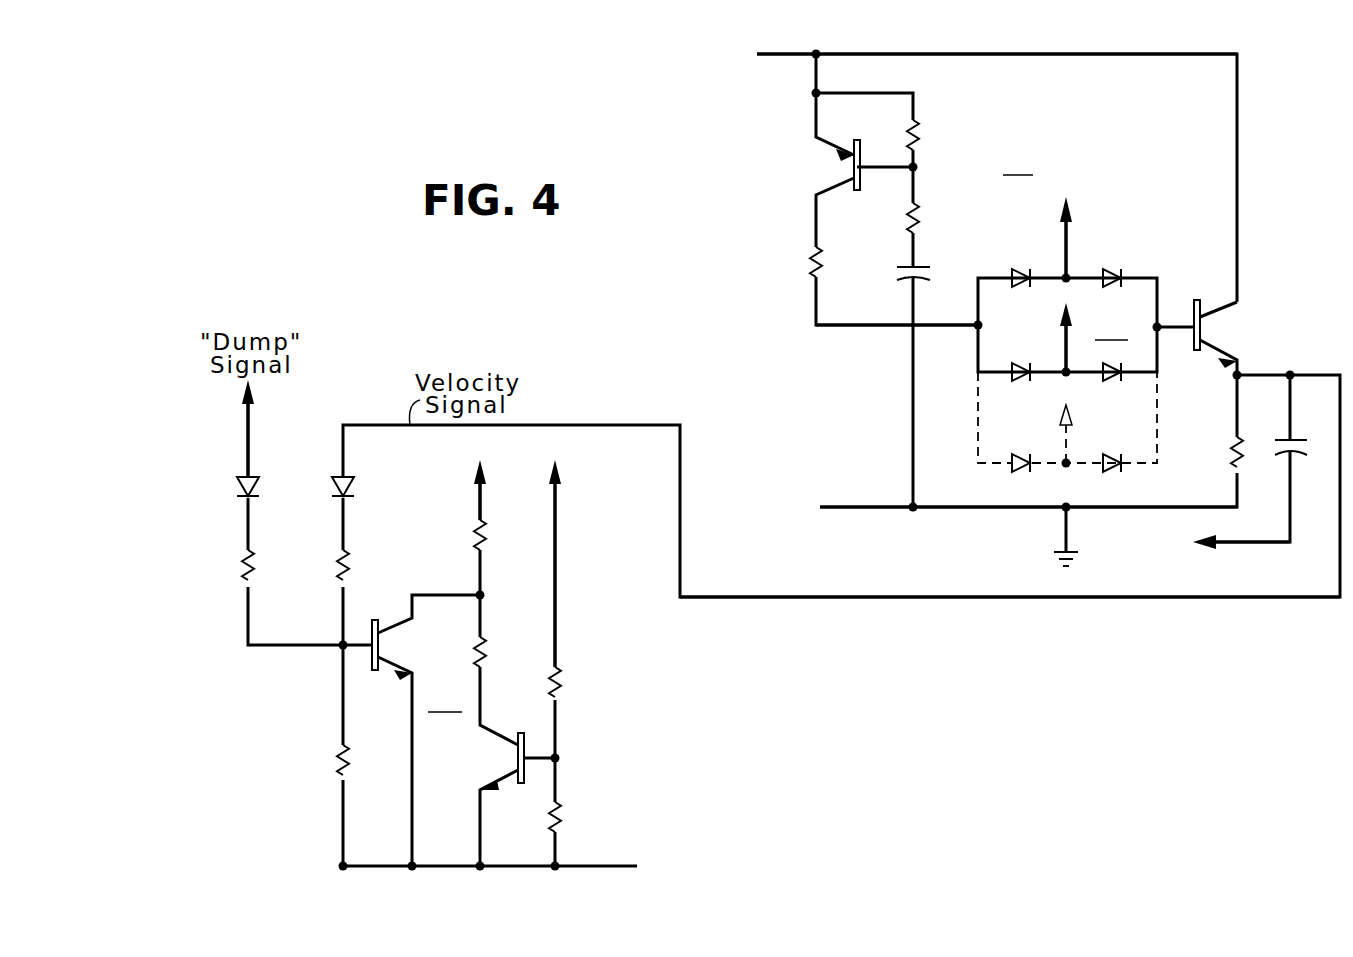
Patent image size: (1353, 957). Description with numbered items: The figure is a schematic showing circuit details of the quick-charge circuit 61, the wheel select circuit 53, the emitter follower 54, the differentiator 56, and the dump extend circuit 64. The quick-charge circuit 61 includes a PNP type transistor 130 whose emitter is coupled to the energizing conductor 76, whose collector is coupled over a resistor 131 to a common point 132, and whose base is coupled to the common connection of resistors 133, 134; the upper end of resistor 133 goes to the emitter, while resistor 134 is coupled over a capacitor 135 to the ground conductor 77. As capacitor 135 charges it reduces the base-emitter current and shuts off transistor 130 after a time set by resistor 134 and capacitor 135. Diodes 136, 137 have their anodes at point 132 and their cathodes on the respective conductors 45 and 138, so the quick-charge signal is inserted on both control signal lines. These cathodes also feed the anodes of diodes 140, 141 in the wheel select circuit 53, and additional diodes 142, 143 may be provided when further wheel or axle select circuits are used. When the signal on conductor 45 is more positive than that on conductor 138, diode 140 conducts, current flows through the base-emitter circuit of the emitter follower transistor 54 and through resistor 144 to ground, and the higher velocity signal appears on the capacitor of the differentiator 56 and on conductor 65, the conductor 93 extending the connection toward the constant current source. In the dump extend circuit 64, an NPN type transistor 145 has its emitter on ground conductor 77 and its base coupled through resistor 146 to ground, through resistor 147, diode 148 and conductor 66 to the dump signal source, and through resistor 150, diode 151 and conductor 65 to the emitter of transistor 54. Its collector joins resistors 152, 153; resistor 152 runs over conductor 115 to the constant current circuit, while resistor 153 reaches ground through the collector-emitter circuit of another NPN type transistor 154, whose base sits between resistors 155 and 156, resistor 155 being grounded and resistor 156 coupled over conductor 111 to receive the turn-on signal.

The energizing conductor 76 is at (1032, 57).
The quick-charge circuit 61 is at (1018, 162).
The conductor 45 is at (1068, 240).
The PNP type transistor 130 is at (828, 165).
The resistor 133 is at (938, 135).
The resistor 134 is at (938, 218).
The resistor 131 is at (797, 262).
The capacitor 135 is at (936, 269).
The common point 132 is at (975, 328).
The diode 136 is at (1024, 265).
The diode 140 is at (1115, 265).
The diode 137 is at (1023, 383).
The diode 141 is at (1115, 383).
The diode 142 is at (1023, 452).
The diode 143 is at (1115, 452).
The conductor 138 is at (1060, 348).
The wheel select circuit 53 is at (1111, 327).
The emitter follower 54 is at (1220, 325).
The resistor 144 is at (1216, 455).
The differentiator 56 is at (1300, 462).
The conductor 93 is at (1250, 545).
The ground conductor 77 is at (856, 505).
The conductor 65 is at (836, 595).
The conductor 66 is at (246, 436).
The diode 148 is at (222, 489).
The resistor 147 is at (225, 568).
The diode 151 is at (366, 491).
The resistor 150 is at (369, 567).
The resistor 146 is at (321, 762).
The conductor 115 is at (478, 494).
The conductor 111 is at (557, 497).
The resistor 152 is at (505, 535).
The resistor 153 is at (505, 652).
The NPN type transistor 145 is at (405, 645).
The dump extend circuit 64 is at (445, 698).
The resistor 156 is at (580, 684).
The NPN type transistor 154 is at (492, 758).
The resistor 155 is at (579, 817).